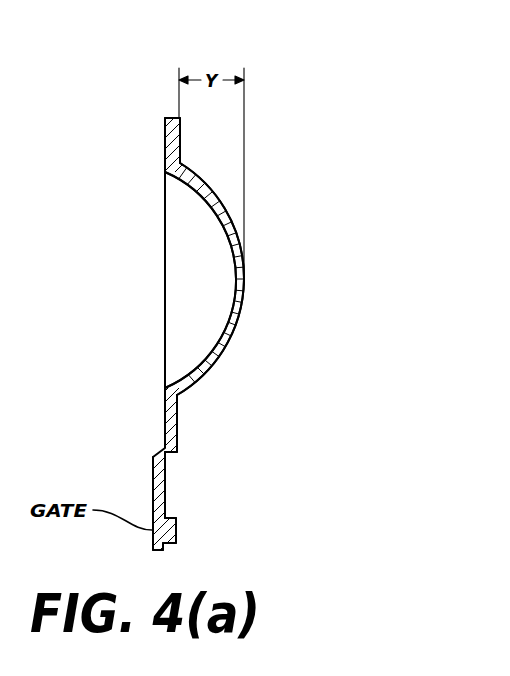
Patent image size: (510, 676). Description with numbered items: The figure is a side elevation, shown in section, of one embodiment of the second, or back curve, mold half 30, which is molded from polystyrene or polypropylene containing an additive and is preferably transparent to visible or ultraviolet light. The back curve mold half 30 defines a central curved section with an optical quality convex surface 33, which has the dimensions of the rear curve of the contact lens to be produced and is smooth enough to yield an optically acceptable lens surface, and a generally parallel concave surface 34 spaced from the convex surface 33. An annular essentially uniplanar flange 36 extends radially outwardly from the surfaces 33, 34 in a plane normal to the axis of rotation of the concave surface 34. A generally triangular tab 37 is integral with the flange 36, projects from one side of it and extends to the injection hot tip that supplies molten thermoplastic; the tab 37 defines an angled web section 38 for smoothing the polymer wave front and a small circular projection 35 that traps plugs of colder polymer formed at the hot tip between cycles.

The back curve mold half 30 is at (153, 238).
The convex surface 33 is at (243, 245).
The concave surface 34 is at (227, 293).
The small circular projection 35 is at (183, 532).
The annular essentially uniplanar flange 36 is at (180, 139).
The generally triangular tab 37 is at (152, 483).
The angled web section 38 is at (168, 457).